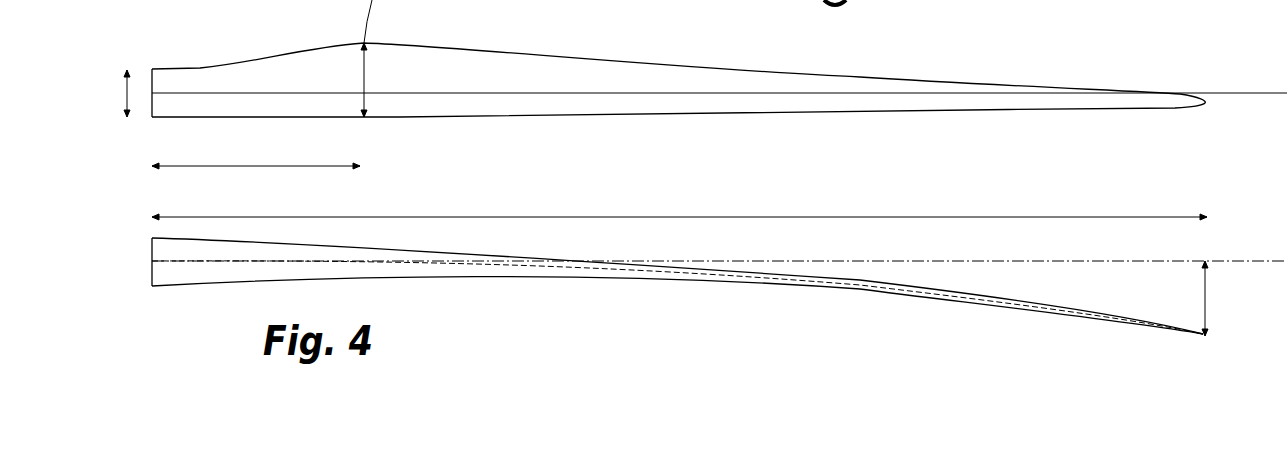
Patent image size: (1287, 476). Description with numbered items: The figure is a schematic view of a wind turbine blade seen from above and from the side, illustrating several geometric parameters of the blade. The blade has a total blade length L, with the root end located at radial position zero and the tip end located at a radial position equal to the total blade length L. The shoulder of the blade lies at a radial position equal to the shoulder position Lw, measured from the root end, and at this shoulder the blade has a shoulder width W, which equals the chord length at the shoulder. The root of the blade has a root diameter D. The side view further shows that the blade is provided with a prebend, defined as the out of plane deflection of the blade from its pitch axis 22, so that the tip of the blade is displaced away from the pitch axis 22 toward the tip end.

The pitch axis 22 is at (570, 92).
The shoulder width W is at (377, 80).
The root diameter D is at (118, 93).
The shoulder position Lw is at (256, 154).
The total blade length L is at (679, 205).